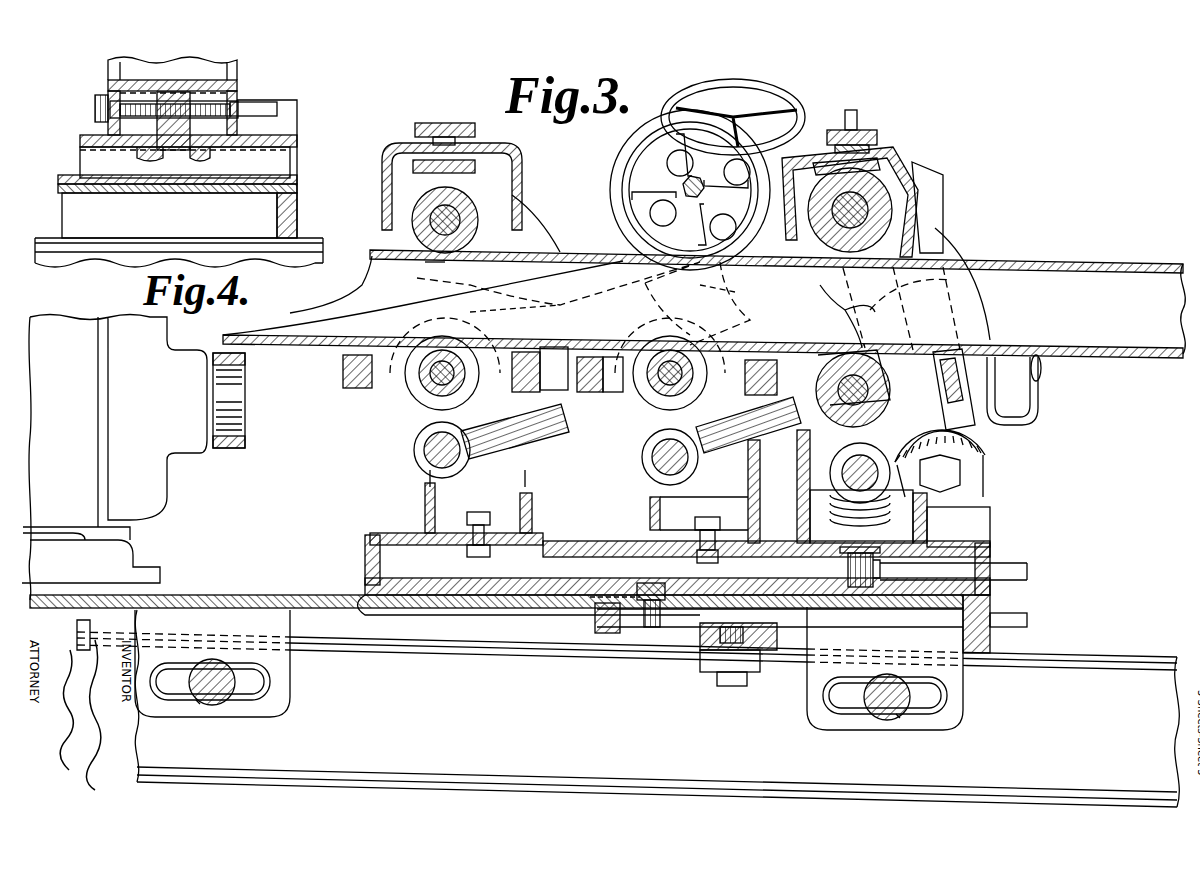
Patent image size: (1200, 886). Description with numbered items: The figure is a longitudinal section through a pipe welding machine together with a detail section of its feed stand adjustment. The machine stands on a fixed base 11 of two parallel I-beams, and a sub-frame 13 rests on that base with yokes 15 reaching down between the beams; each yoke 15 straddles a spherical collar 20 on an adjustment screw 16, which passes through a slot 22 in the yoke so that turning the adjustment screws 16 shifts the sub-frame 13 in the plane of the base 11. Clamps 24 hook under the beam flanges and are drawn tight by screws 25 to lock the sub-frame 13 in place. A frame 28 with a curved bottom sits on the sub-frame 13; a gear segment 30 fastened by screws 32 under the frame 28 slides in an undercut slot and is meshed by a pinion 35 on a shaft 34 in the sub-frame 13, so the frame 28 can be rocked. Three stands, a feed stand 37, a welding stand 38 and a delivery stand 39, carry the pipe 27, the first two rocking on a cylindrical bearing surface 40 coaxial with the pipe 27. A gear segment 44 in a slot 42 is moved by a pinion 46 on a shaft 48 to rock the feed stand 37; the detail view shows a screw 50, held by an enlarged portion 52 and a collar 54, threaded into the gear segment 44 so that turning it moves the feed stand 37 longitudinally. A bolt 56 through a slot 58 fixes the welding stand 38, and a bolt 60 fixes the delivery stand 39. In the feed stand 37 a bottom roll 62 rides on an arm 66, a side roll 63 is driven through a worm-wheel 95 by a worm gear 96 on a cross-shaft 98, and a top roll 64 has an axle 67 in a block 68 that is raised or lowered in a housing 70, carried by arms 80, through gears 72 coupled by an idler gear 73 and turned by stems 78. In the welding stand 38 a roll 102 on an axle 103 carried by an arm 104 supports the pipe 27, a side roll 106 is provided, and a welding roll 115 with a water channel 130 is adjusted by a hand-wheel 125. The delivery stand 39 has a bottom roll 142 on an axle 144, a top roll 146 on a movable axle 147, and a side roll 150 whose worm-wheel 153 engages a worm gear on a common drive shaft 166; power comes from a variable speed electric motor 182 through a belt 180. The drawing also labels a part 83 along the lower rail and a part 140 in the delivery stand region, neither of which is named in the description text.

In FIG. 4, the fixed base 11 is at (305, 246).
In FIG. 3, the fixed base 11 is at (628, 708).
In FIG. 4, the sub-frame 13 is at (298, 205).
In FIG. 3, the sub-frame 13 is at (990, 638).
In FIG. 3, the yoke 15 is at (290, 665).
In FIG. 3, the adjustment screw 16 is at (199, 715).
In FIG. 3, the spherical collar 20 is at (212, 705).
In FIG. 3, the slot 22 is at (262, 698).
In FIG. 3, the clamp 24 is at (88, 645).
In FIG. 3, the screw 25 is at (745, 685).
In FIG. 3, the pipe 27 is at (1090, 263).
In FIG. 4, the frame 28 is at (302, 134).
In FIG. 3, the frame 28 is at (993, 557).
In FIG. 3, the gear segment 30 is at (600, 600).
In FIG. 3, the screw 32 is at (645, 583).
In FIG. 3, the shaft 34 is at (700, 650).
In FIG. 3, the pinion 35 is at (650, 630).
In FIG. 4, the feed stand 37 is at (110, 88).
In FIG. 3, the feed stand 37 is at (917, 525).
In FIG. 3, the welding stand 38 is at (650, 520).
In FIG. 3, the delivery stand 39 is at (533, 512).
In FIG. 4, the cylindrical bearing surface 40 is at (298, 108).
In FIG. 3, the cylindrical bearing surface 40 is at (975, 512).
In FIG. 4, the slot 42 is at (158, 160).
In FIG. 3, the slot 42 is at (878, 555).
In FIG. 4, the gear segment 44 is at (195, 160).
In FIG. 3, the gear segment 44 is at (850, 547).
In FIG. 3, the pinion 46 is at (848, 568).
In FIG. 3, the shaft 48 is at (880, 572).
In FIG. 4, the screw 50 is at (212, 102).
In FIG. 4, the enlarged portion 52 is at (270, 102).
In FIG. 4, the collar 54 is at (95, 110).
In FIG. 3, the bolt 56 is at (697, 560).
In FIG. 3, the slot 58 is at (690, 527).
In FIG. 3, the bolt 60 is at (467, 555).
In FIG. 3, the bottom roll 62 is at (850, 425).
In FIG. 3, the side roll 63 is at (830, 310).
In FIG. 3, the top roll 64 is at (882, 238).
In FIG. 3, the arm 66 is at (962, 375).
In FIG. 3, the axle 67 is at (840, 213).
In FIG. 3, the block 68 is at (490, 150).
In FIG. 3, the housing 70 is at (936, 200).
In FIG. 3, the gear 72 is at (838, 145).
In FIG. 3, the idler gear 73 is at (415, 130).
In FIG. 3, the stem 78 is at (857, 115).
In FIG. 3, the arm 80 is at (988, 324).
In FIG. 3, the lower rail 83 is at (560, 262).
In FIG. 3, the worm-wheel 95 is at (962, 465).
In FIG. 3, the worm gear 96 is at (830, 495).
In FIG. 3, the cross-shaft 98 is at (845, 465).
In FIG. 3, the roll 102 is at (560, 395).
In FIG. 3, the axle 103 is at (648, 400).
In FIG. 3, the arm 104 is at (696, 440).
In FIG. 3, the side roll 106 is at (735, 292).
In FIG. 3, the welding roll 115 is at (625, 177).
In FIG. 3, the hand-wheel 125 is at (762, 80).
In FIG. 3, the channel 130 is at (648, 145).
In FIG. 3, the roller 140 is at (642, 460).
In FIG. 3, the bottom roll 142 is at (420, 410).
In FIG. 3, the axle 144 is at (430, 380).
In FIG. 3, the top roll 146 is at (412, 228).
In FIG. 3, the axle 147 is at (430, 262).
In FIG. 3, the side roll 150 is at (505, 312).
In FIG. 3, the worm-wheel 153 is at (540, 440).
In FIG. 3, the common drive shaft 166 is at (428, 458).
In FIG. 3, the belt 180 is at (235, 450).
In FIG. 3, the variable speed electric motor 182 is at (114, 458).